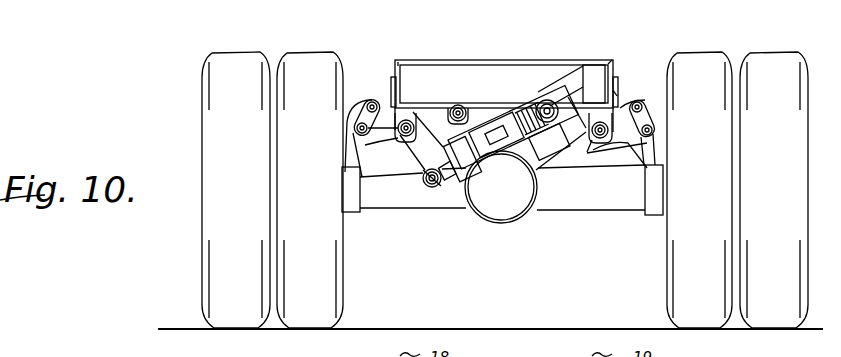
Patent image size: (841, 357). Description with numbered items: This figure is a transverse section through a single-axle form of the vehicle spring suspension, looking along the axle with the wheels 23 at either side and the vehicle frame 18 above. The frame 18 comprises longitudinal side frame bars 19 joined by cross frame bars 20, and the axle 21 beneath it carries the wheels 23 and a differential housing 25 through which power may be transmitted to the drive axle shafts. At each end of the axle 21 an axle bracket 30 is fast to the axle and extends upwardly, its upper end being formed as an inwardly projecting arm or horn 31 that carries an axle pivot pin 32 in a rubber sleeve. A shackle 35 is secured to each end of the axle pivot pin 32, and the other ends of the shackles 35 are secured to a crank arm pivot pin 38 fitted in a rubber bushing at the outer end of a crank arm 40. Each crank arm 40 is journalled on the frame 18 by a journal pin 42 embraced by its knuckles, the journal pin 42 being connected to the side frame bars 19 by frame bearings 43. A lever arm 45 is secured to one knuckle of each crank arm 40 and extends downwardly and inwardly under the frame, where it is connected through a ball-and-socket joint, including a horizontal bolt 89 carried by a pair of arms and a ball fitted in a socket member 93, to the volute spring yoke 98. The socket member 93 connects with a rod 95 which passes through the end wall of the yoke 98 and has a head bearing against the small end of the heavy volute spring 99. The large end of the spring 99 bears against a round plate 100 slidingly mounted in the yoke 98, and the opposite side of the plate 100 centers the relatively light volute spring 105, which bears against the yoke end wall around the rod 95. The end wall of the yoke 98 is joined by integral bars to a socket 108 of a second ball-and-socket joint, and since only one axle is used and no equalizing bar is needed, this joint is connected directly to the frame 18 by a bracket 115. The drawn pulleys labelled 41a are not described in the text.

The frame 18 is at (413, 51).
The longitudinal side frame bar 19 is at (614, 66).
The cross frame bar 20 is at (496, 58).
The axle 21 is at (387, 205).
The wheel 23 is at (236, 190).
The differential housing 25 is at (507, 229).
The axle bracket 30 is at (345, 165).
The arm or horn 31 is at (653, 111).
The axle pivot pin 32 is at (371, 101).
The shackle 35 is at (656, 126).
The crank arm pivot pin 38 is at (355, 129).
The crank arm 40 is at (625, 143).
The pulley 41a is at (463, 94).
The journal pin 42 is at (375, 152).
The frame bearing 43 is at (616, 94).
The lever arm 45 is at (588, 160).
The horizontal bolt 89 is at (426, 188).
The socket member 93 is at (445, 198).
The rod 95 is at (541, 102).
The yoke 98 is at (501, 187).
The volute spring 99 is at (520, 116).
The round plate 100 is at (506, 174).
The light volute spring 105 is at (425, 141).
The socket 108 is at (417, 114).
The bracket 115 is at (590, 78).